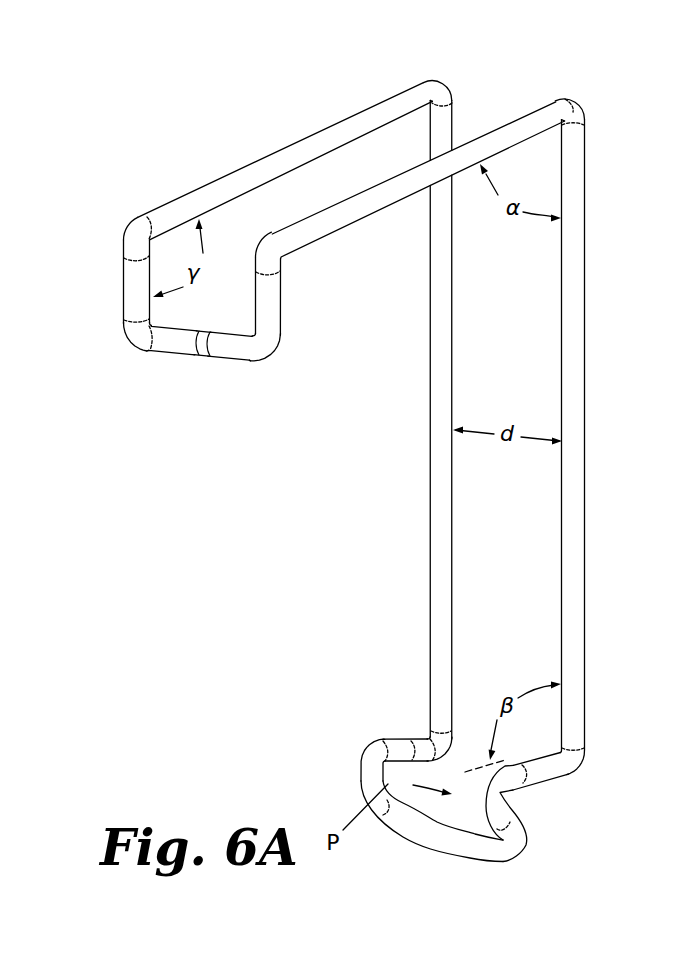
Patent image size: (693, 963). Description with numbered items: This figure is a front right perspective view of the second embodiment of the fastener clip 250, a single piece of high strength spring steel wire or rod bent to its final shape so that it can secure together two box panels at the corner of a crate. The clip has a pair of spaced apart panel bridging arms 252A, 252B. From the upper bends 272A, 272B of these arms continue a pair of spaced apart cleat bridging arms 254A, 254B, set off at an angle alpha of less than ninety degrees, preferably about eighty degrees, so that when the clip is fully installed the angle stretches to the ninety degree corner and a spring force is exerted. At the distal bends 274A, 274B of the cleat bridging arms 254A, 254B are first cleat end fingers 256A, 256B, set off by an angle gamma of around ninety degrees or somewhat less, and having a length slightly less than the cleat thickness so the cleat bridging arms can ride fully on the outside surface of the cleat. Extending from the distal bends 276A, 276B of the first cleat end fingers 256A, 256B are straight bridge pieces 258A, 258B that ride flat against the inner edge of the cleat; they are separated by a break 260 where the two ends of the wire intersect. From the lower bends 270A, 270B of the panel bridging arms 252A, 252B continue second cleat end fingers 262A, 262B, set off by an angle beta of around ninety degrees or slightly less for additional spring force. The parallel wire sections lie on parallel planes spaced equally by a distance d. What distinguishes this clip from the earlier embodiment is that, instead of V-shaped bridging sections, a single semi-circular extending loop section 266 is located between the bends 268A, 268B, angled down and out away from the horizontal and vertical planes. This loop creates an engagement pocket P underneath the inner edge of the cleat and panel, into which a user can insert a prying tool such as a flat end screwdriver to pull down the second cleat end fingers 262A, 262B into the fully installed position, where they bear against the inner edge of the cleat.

The fastener clip 250 is at (308, 533).
The panel bridging arm 252A is at (585, 398).
The panel bridging arm 252B is at (430, 476).
The cleat bridging arm 254A is at (377, 208).
The cleat bridging arm 254B is at (300, 140).
The first cleat end finger 256A is at (278, 310).
The first cleat end finger 256B is at (128, 292).
The bridge piece 258A is at (233, 357).
The bridge piece 258B is at (172, 350).
The break 260 is at (207, 354).
The second cleat end finger 262A is at (548, 781).
The second cleat end finger 262B is at (408, 738).
The single semi-circular extending loop section 266 is at (442, 843).
The bend 268A is at (505, 795).
The bend 268B is at (367, 773).
The lower bend 270A is at (584, 758).
The lower bend 270B is at (452, 739).
The upper bend 272A is at (580, 111).
The upper bend 272B is at (449, 92).
The distal bend 274A is at (276, 260).
The distal bend 274B is at (128, 238).
The distal bend 276A is at (270, 360).
The distal bend 276B is at (136, 341).